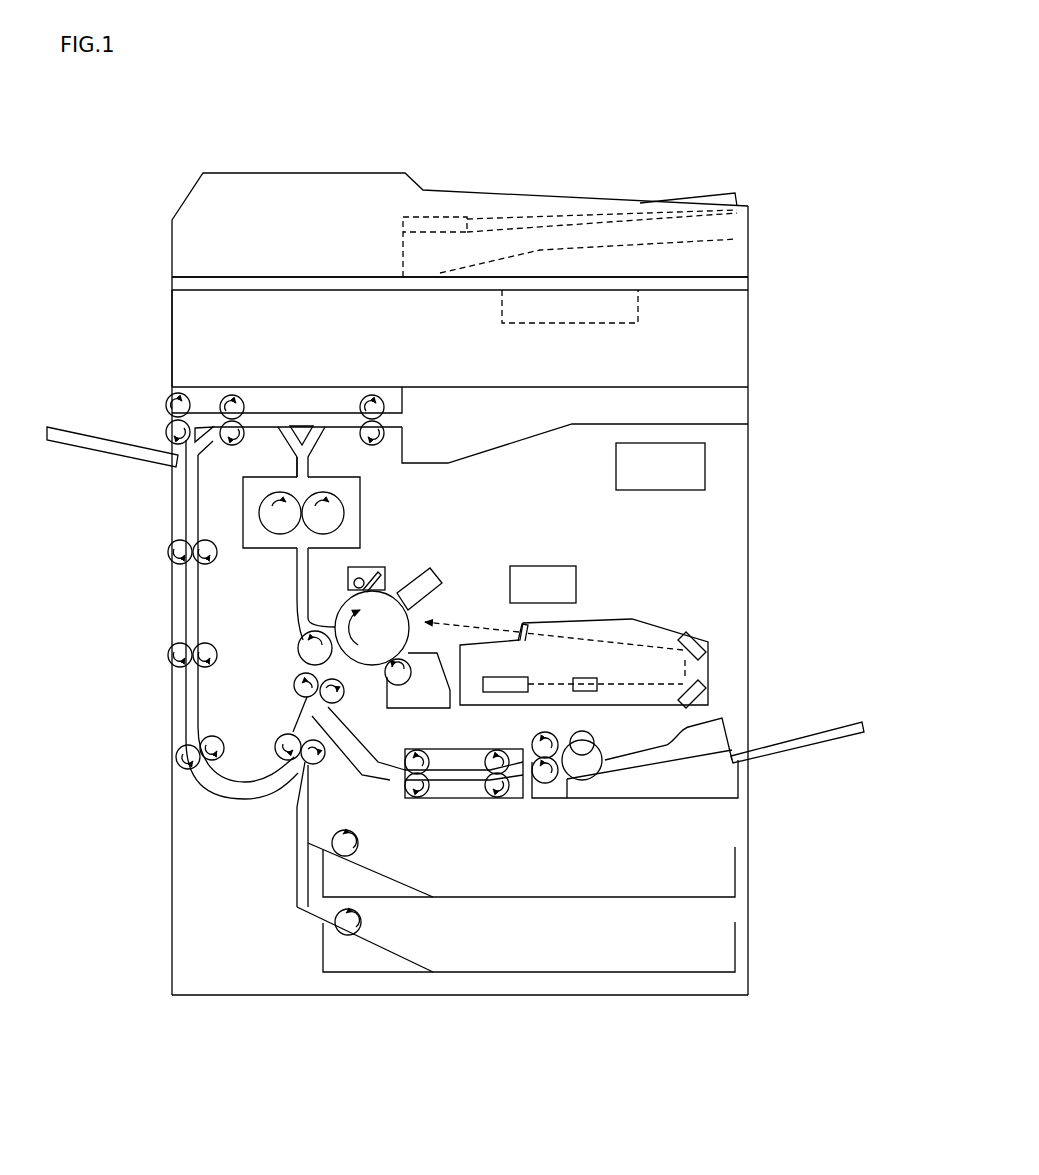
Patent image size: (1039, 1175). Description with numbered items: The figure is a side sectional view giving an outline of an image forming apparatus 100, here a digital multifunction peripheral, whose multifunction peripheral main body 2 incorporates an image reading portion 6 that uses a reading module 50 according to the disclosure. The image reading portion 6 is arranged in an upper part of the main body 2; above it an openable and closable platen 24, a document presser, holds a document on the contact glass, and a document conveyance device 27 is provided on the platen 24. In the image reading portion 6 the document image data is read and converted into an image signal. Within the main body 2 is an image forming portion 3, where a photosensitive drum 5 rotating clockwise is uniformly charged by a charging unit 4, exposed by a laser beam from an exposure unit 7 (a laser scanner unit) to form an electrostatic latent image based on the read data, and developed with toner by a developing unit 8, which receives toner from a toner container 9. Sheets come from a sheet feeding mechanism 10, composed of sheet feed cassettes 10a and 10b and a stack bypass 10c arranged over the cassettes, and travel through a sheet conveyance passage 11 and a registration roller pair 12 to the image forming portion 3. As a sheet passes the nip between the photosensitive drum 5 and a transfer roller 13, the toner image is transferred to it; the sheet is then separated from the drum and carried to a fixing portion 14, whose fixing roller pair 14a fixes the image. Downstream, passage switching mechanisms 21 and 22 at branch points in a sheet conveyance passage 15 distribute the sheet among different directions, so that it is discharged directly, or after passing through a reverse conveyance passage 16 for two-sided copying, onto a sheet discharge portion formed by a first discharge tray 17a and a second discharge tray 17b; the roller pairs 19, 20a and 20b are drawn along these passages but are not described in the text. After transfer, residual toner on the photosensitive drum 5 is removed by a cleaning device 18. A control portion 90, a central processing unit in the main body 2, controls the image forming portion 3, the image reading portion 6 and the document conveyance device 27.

The image forming apparatus 100 is at (665, 160).
The multifunction peripheral main body 2 is at (750, 528).
The document conveyance device 27 is at (210, 203).
The platen 24 is at (750, 280).
The image reading portion 6 is at (185, 343).
The reading module 50 is at (568, 323).
The first discharge tray 17a is at (575, 437).
The second discharge tray 17b is at (88, 438).
The control portion 90 is at (705, 453).
The discharge roller pair 19 is at (232, 402).
The conveyance roller pair 20a is at (387, 413).
The conveyance roller pair 20b is at (165, 418).
The passage switching mechanism 21 is at (297, 423).
The passage switching mechanism 22 is at (187, 437).
The sheet conveyance passage 15 is at (290, 460).
The fixing portion 14 is at (243, 512).
The fixing roller pair 14a is at (340, 503).
The reverse conveyance passage 16 is at (190, 593).
The registration roller pair 12 is at (300, 693).
The transfer roller 13 is at (297, 653).
The image forming portion 3 is at (426, 547).
The photosensitive drum 5 is at (360, 653).
The cleaning device 18 is at (367, 568).
The charging unit 4 is at (430, 588).
The developing unit 8 is at (418, 697).
The toner container 9 is at (547, 572).
The exposure unit 7 is at (613, 633).
The sheet conveyance passage 11 is at (297, 790).
The sheet feeding mechanism 10 is at (769, 825).
The sheet feed cassette 10a is at (720, 878).
The sheet feed cassette 10b is at (725, 952).
The stack bypass 10c is at (775, 725).